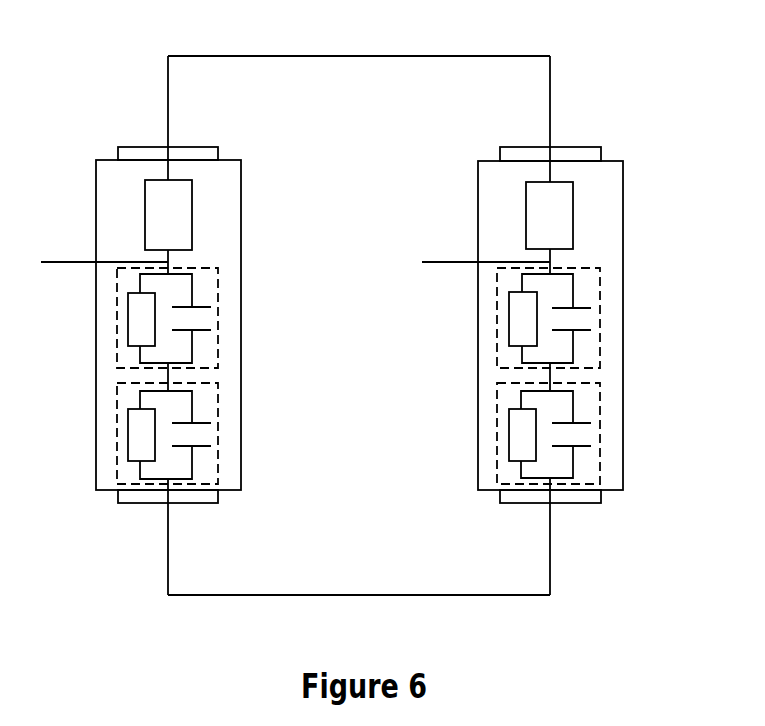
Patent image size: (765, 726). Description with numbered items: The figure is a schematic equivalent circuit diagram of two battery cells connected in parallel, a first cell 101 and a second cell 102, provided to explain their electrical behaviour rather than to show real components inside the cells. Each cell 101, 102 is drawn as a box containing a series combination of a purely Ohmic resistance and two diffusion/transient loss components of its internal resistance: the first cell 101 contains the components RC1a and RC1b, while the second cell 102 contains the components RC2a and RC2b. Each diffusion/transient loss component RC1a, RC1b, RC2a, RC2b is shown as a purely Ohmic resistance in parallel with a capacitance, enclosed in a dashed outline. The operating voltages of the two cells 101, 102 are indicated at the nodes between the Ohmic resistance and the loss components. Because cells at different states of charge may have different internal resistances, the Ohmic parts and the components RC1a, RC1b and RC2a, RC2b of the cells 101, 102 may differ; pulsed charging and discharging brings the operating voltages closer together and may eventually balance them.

The first cell 101 is at (182, 325).
The second cell 102 is at (563, 325).
The diffusion/transient loss component RC1a is at (218, 305).
The diffusion/transient loss component RC1b is at (218, 402).
The diffusion/transient loss component RC2a is at (600, 305).
The diffusion/transient loss component RC2b is at (600, 403).